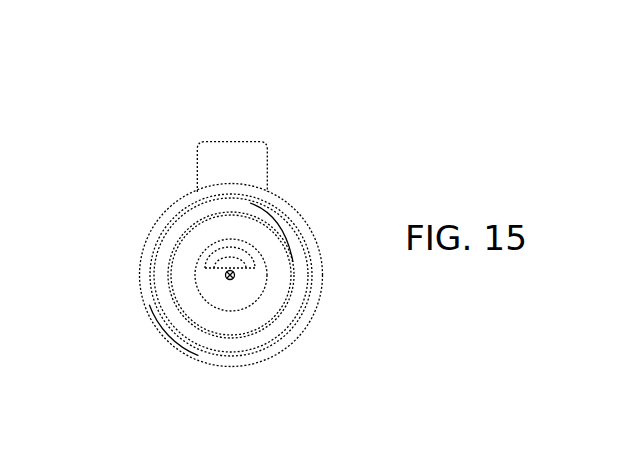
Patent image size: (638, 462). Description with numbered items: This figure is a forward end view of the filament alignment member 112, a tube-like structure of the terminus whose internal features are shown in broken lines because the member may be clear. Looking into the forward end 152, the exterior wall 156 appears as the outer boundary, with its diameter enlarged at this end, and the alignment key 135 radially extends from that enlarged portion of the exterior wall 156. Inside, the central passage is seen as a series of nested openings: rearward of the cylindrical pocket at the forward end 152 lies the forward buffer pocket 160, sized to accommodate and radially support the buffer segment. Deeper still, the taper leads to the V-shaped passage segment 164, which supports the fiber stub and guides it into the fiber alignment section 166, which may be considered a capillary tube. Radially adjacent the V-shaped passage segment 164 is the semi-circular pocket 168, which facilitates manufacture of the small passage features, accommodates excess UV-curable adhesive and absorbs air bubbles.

The filament alignment member 112 is at (282, 200).
The alignment key 135 is at (233, 153).
The forward end 152 is at (292, 240).
The exterior wall 156 is at (272, 303).
The forward buffer pocket 160 is at (242, 297).
The V-shaped passage segment 164 is at (232, 276).
The fiber alignment section 166 is at (228, 275).
The pocket 168 is at (226, 262).